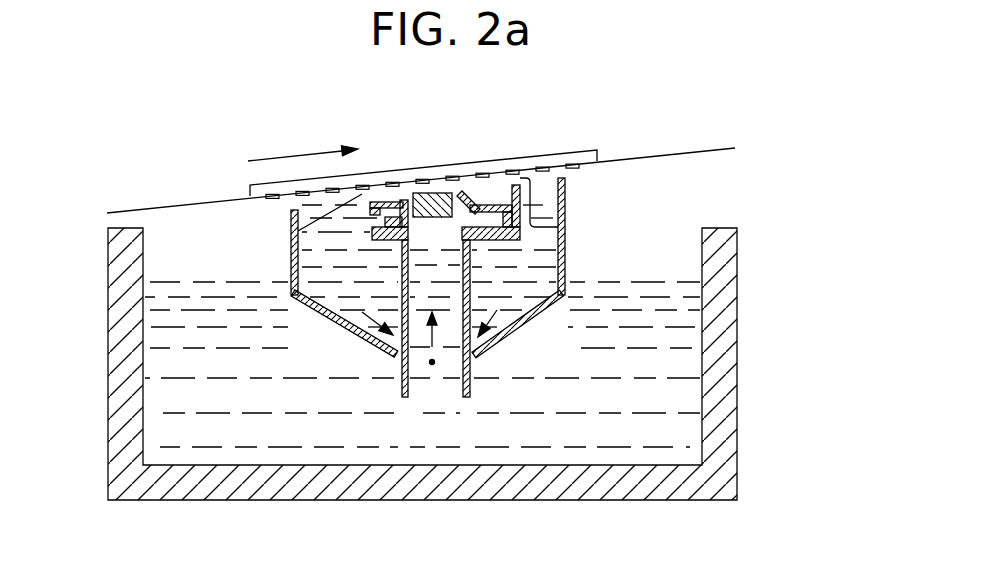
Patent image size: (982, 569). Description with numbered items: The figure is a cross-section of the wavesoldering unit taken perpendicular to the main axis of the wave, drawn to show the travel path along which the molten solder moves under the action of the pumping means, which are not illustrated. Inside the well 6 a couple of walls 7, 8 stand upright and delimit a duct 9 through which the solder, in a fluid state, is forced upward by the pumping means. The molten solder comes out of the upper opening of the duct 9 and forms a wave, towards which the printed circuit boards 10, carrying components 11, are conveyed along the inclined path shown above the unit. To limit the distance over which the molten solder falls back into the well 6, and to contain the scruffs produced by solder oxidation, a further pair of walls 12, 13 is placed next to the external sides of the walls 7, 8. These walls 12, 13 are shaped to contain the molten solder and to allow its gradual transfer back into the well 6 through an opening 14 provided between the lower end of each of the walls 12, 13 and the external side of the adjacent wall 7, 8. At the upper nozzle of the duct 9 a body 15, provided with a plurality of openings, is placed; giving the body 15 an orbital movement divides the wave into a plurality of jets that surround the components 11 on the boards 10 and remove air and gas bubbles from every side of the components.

The well 6 is at (737, 300).
The wall 7 is at (473, 383).
The wall 8 is at (403, 382).
The duct 9 is at (432, 365).
The printed circuit board 10 is at (543, 163).
The components 11 is at (579, 168).
The wall 12 is at (542, 312).
The wall 13 is at (322, 313).
The opening 14 is at (397, 354).
The body 15 is at (427, 193).